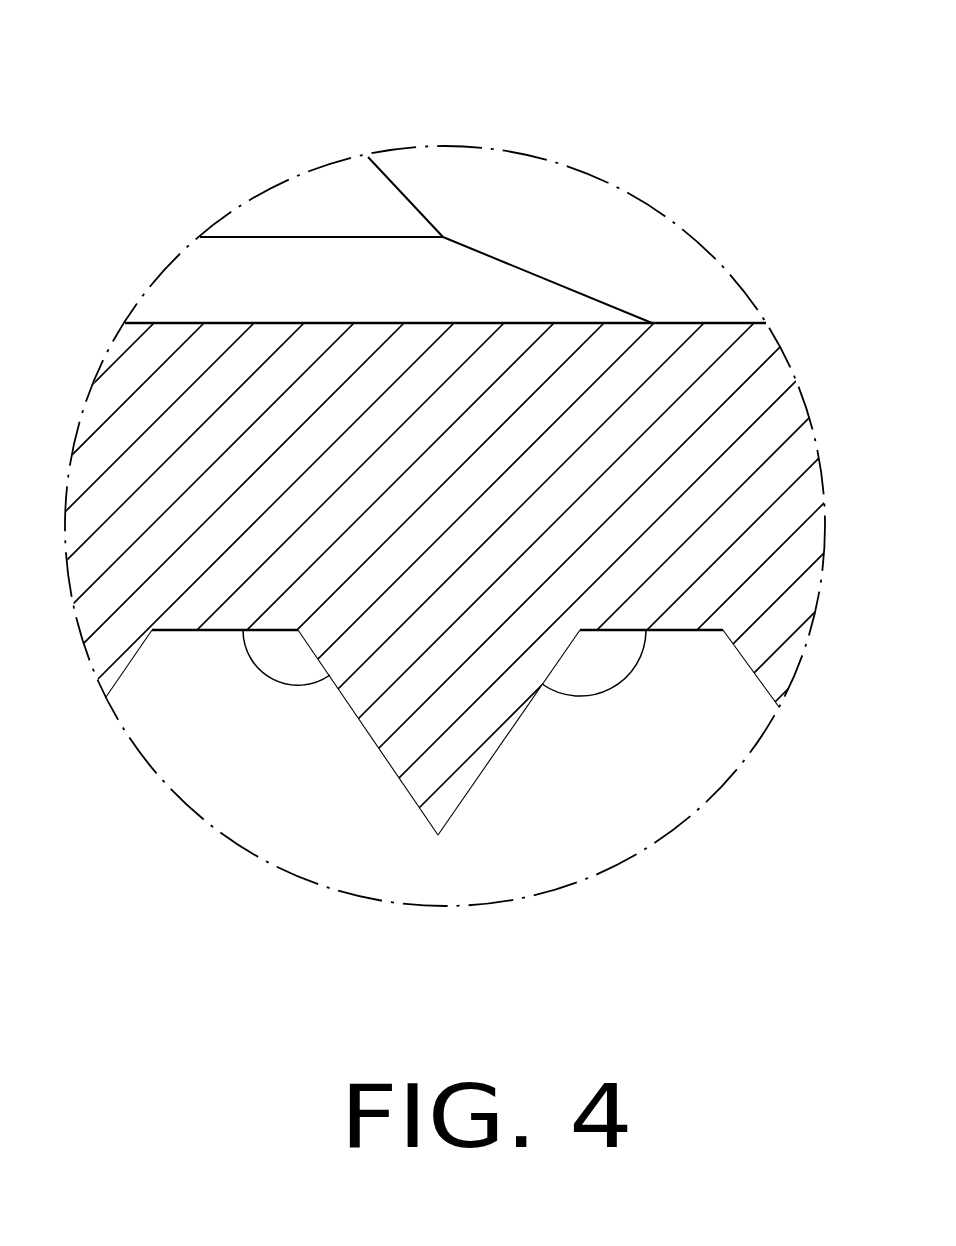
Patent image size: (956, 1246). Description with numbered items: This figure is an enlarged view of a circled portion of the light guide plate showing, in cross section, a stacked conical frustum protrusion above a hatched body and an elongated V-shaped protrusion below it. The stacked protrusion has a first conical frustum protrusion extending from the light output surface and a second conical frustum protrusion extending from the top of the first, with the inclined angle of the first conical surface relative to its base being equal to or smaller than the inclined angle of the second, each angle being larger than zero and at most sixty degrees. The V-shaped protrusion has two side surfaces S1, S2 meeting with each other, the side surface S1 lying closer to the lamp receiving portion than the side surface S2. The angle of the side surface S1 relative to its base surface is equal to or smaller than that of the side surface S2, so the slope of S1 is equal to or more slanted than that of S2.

The side surface S1 is at (510, 733).
The side surface S2 is at (367, 735).